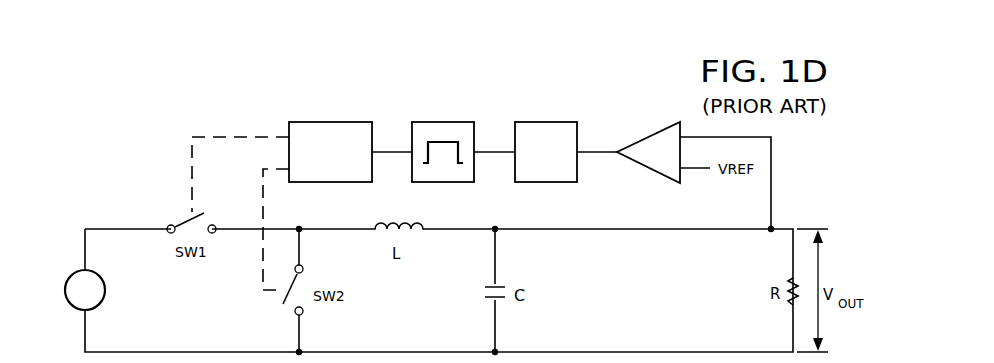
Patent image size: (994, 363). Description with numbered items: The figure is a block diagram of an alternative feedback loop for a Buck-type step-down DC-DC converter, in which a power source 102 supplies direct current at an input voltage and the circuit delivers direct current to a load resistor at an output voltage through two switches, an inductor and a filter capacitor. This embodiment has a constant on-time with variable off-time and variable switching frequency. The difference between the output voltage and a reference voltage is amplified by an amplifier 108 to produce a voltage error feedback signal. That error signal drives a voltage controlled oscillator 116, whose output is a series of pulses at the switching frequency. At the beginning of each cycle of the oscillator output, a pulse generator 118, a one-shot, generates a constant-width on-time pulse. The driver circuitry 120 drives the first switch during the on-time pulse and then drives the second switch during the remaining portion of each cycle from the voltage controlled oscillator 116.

The power source 102 is at (69, 305).
The amplifier 108 is at (650, 135).
The voltage controlled oscillator 116 is at (545, 121).
The pulse generator 118 is at (443, 121).
The driver circuitry 120 is at (330, 121).